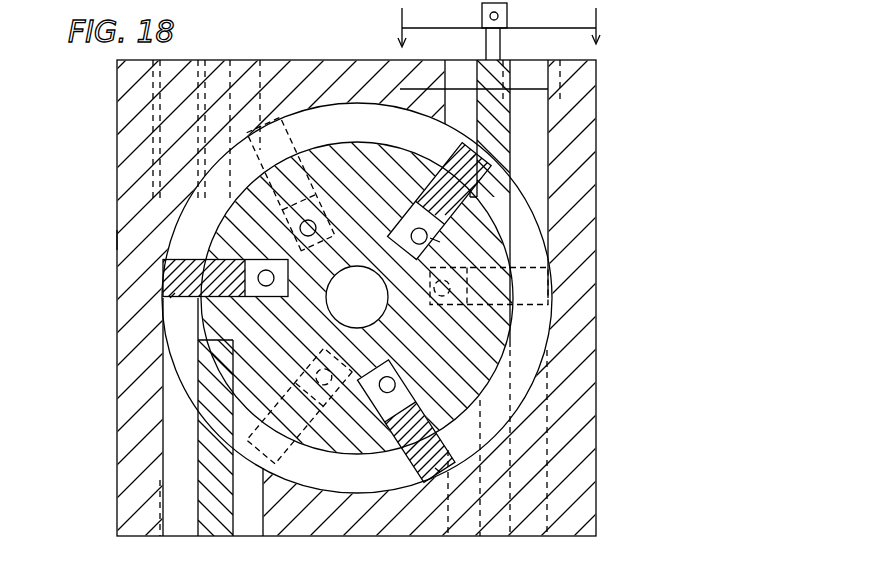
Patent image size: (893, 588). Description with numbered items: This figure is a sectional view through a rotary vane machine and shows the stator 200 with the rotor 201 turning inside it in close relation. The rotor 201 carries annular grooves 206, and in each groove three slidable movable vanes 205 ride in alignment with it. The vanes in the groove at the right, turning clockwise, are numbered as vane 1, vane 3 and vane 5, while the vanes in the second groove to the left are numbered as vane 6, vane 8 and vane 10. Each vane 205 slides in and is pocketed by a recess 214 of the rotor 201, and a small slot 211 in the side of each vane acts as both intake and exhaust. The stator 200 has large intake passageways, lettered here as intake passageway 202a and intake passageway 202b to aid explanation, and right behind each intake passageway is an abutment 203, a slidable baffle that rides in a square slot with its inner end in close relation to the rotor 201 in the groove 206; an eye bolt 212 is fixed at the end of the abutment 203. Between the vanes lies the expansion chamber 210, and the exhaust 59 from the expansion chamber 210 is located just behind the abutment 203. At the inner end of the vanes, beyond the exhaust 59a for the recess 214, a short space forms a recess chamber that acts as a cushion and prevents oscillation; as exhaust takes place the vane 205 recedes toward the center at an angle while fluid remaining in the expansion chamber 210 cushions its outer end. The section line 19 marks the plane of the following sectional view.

The vane 1 is at (202, 277).
The vane 3 is at (452, 195).
The vane 5 is at (415, 421).
The vane 6 is at (489, 286).
The vane 8 is at (299, 406).
The vane 10 is at (291, 184).
The section line 19- 19 is at (499, 27).
The exhaust from expansion chamber 59 is at (467, 112).
The exhaust for recess 59a is at (435, 240).
The stator 200 is at (138, 142).
The rotor 201 is at (262, 213).
The large intake passageway 202a is at (175, 107).
The large intake passageway 202b is at (525, 133).
The abutment 203 is at (495, 164).
The slidable movable vane 205 is at (440, 472).
The annular groove 206 is at (320, 477).
The expansion chamber 210 is at (465, 445).
The small slot 211 is at (433, 460).
The eye bolt 212 is at (498, 24).
The recess 214 is at (128, 238).